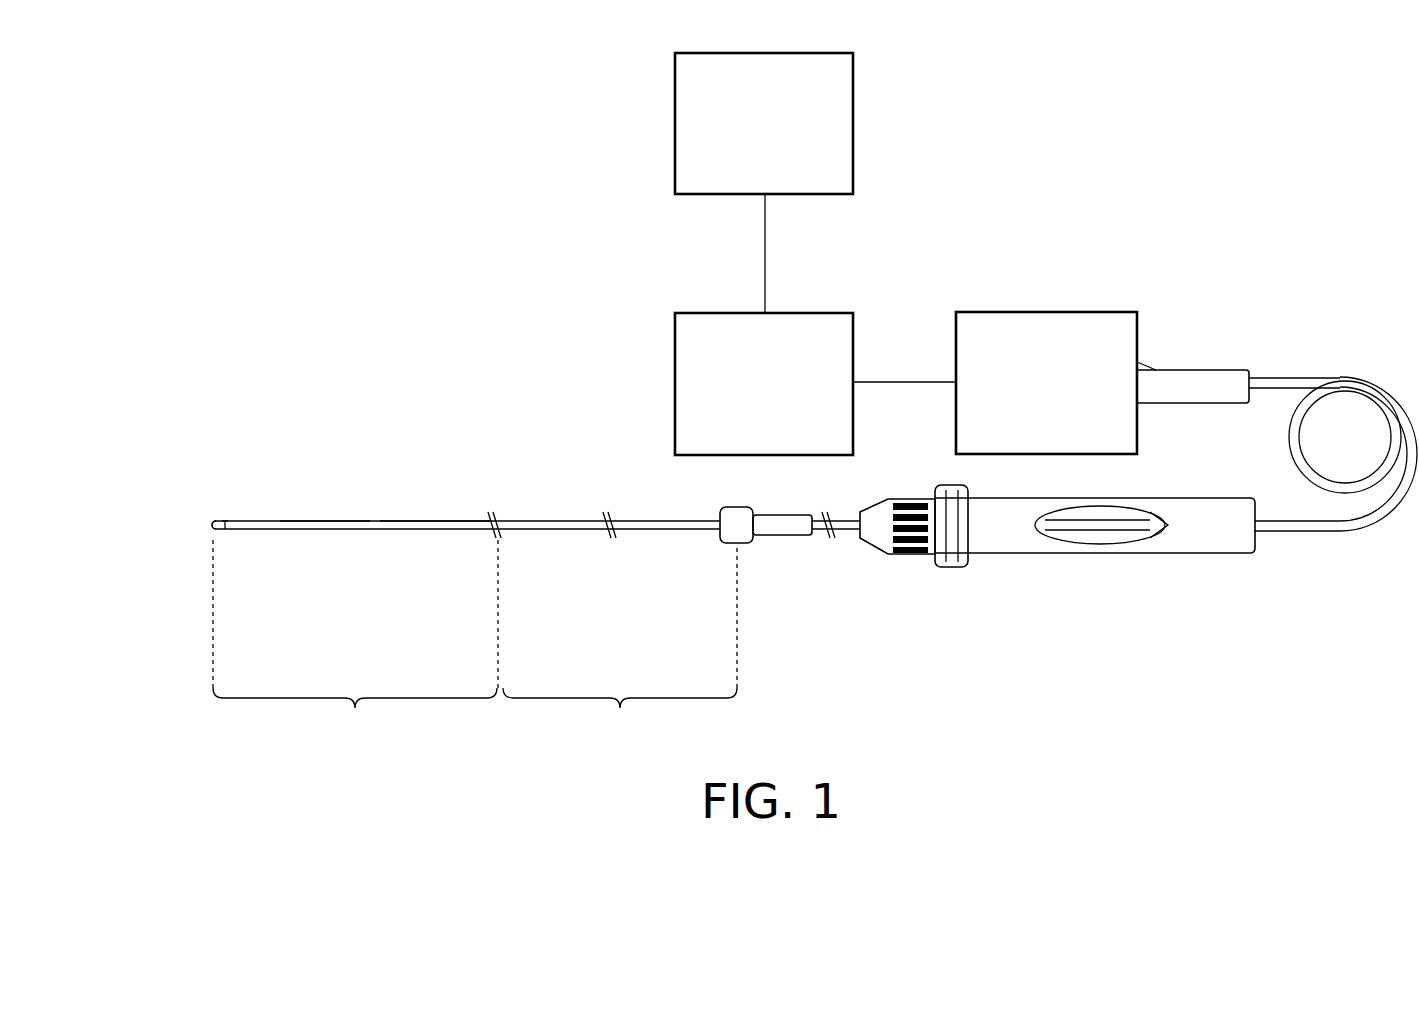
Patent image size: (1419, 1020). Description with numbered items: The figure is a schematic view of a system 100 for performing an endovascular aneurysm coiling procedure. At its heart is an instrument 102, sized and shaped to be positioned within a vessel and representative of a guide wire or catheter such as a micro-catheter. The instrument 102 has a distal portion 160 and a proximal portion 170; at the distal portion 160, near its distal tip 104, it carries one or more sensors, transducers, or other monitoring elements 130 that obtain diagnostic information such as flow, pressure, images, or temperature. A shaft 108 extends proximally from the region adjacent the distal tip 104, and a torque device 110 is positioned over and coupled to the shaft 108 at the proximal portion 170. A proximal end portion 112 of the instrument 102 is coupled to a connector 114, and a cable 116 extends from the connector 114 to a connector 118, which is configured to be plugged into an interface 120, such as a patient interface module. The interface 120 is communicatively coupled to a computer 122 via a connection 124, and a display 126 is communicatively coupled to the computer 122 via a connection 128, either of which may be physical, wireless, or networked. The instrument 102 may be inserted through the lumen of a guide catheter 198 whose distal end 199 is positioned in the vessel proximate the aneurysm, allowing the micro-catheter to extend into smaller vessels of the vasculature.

The system 100 is at (1308, 162).
The instrument 102 is at (586, 540).
The distal tip 104 is at (208, 522).
The shaft 108 is at (438, 532).
The torque device 110 is at (772, 544).
The proximal end portion 112 is at (845, 538).
The connector 114 is at (1045, 554).
The cable 116 is at (1378, 524).
The connector 118 is at (1205, 370).
The interface 120 is at (1047, 312).
The computer 122 is at (675, 370).
The connection 124 is at (910, 382).
The display 126 is at (675, 108).
The connection 128 is at (765, 248).
The sensors, transducers, and/or other monitoring elements 130 is at (212, 534).
The distal portion 160 is at (355, 641).
The proximal portion 170 is at (620, 645).
The guide catheter 198 is at (320, 532).
The distal end 199 is at (224, 521).